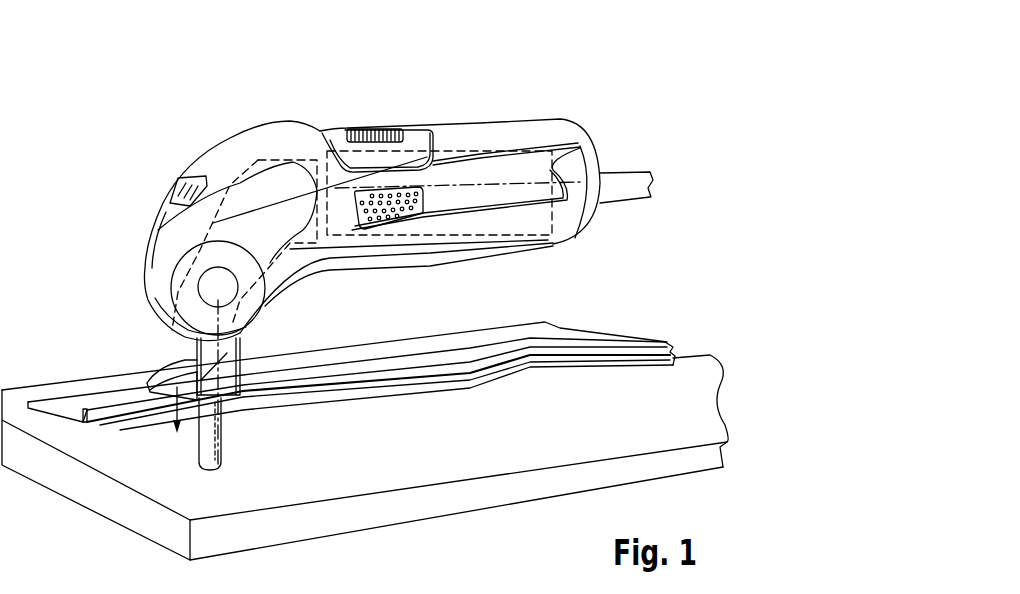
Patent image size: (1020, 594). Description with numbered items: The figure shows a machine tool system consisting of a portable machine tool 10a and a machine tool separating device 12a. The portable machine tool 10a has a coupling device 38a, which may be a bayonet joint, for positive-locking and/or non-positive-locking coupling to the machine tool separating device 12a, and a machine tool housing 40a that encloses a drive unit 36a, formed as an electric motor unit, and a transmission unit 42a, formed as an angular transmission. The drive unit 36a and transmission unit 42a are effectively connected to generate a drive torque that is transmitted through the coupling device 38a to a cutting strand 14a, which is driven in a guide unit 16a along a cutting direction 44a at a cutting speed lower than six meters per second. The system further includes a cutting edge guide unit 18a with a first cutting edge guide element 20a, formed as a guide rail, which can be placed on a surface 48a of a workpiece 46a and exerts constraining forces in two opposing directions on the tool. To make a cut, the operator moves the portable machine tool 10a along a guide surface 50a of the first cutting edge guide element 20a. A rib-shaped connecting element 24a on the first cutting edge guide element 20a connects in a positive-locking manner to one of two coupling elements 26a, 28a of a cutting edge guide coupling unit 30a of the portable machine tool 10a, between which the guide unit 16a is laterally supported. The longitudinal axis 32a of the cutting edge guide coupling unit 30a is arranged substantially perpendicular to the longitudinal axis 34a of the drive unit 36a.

The portable machine tool 10a is at (636, 72).
The machine tool separating device 12a is at (127, 350).
The cutting strand 14a is at (182, 352).
The guide unit 16a is at (172, 335).
The cutting edge guide unit 18a is at (652, 303).
The first cutting edge guide element 20a is at (603, 337).
The rib-shaped connecting element 24a is at (667, 337).
The coupling element 26a is at (147, 384).
The coupling element 28a is at (213, 405).
The cutting edge guide coupling unit 30a is at (270, 334).
The longitudinal axis 32a is at (233, 427).
The longitudinal axis of the drive unit 34a is at (490, 185).
The drive unit 36a is at (462, 237).
The coupling device 38a is at (128, 240).
The machine tool housing 40a is at (513, 128).
The transmission unit 42a is at (250, 167).
The cutting direction 44a is at (173, 382).
The workpiece 46a is at (373, 508).
The surface of workpiece 48a is at (445, 450).
The guide surface 50a is at (586, 363).